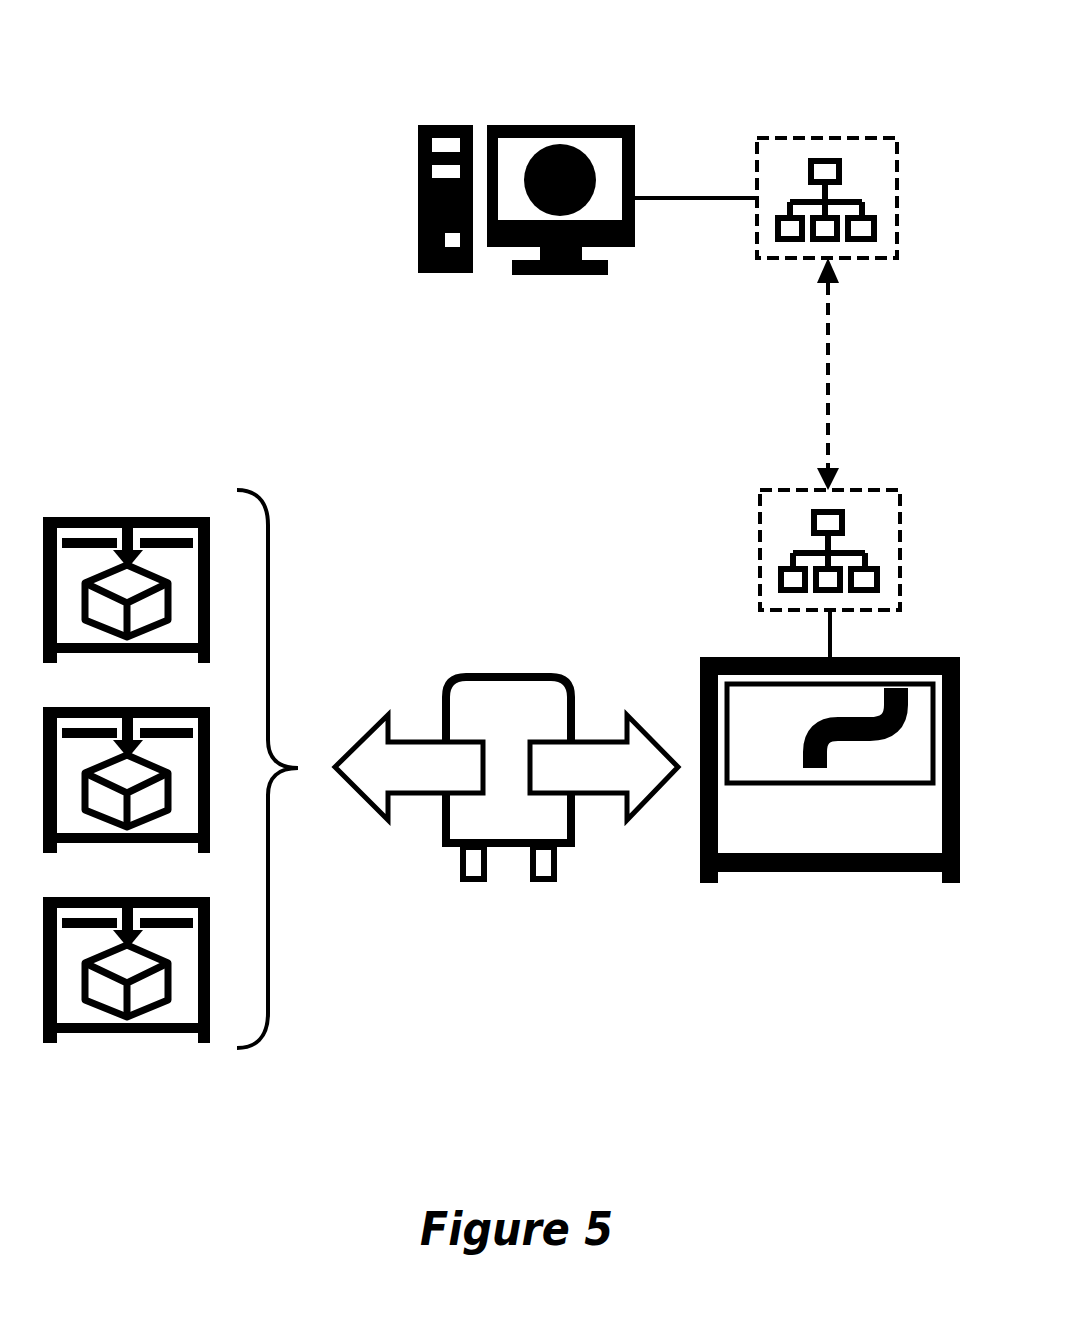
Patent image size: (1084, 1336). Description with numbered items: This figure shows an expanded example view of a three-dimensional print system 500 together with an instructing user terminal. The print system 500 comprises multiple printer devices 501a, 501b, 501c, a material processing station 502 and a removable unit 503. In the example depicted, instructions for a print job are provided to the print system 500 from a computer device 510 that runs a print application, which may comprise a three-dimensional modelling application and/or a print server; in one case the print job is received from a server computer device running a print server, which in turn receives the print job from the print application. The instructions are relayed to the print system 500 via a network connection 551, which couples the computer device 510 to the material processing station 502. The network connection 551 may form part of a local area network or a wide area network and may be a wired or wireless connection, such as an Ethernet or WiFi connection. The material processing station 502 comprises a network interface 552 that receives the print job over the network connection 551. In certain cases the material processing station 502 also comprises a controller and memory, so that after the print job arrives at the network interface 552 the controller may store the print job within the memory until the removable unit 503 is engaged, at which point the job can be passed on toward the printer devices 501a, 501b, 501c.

The 3D print system 500 is at (284, 344).
The computer device 510 is at (438, 125).
The network connection 551 is at (828, 417).
The network interface 552 is at (762, 503).
The material processing station 502 is at (733, 657).
The removable unit 503 is at (512, 673).
The printer device 501a is at (138, 518).
The printer device 501b is at (210, 755).
The printer device 501c is at (155, 1032).